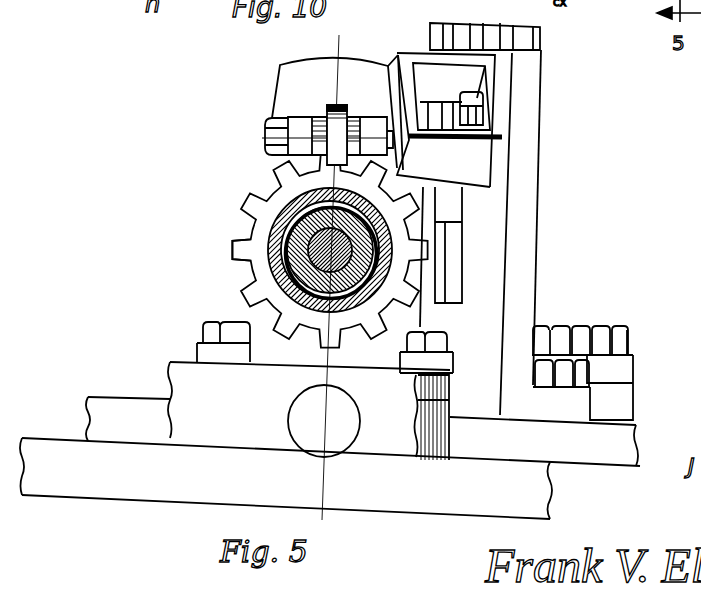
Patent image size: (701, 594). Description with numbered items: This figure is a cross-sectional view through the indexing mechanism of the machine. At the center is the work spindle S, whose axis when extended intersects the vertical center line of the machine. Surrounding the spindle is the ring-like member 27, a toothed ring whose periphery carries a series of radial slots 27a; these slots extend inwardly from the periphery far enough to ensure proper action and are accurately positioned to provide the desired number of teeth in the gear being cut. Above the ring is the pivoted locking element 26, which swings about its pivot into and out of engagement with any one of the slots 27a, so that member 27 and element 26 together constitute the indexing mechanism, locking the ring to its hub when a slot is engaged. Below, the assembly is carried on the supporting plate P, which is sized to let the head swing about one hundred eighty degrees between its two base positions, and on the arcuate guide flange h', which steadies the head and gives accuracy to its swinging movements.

The pivoted locking element 26 is at (347, 110).
The work spindle S is at (313, 247).
The ring-like member 27 is at (245, 272).
The radial slots 27a is at (238, 248).
The arcuate guide flange h' is at (309, 411).
The supporting plate P is at (113, 433).